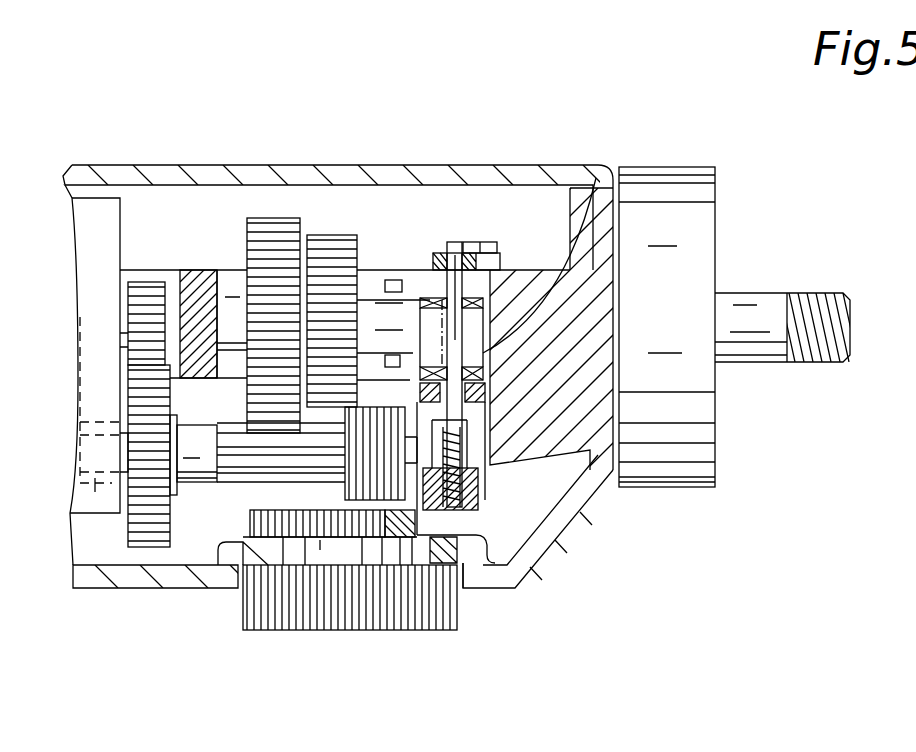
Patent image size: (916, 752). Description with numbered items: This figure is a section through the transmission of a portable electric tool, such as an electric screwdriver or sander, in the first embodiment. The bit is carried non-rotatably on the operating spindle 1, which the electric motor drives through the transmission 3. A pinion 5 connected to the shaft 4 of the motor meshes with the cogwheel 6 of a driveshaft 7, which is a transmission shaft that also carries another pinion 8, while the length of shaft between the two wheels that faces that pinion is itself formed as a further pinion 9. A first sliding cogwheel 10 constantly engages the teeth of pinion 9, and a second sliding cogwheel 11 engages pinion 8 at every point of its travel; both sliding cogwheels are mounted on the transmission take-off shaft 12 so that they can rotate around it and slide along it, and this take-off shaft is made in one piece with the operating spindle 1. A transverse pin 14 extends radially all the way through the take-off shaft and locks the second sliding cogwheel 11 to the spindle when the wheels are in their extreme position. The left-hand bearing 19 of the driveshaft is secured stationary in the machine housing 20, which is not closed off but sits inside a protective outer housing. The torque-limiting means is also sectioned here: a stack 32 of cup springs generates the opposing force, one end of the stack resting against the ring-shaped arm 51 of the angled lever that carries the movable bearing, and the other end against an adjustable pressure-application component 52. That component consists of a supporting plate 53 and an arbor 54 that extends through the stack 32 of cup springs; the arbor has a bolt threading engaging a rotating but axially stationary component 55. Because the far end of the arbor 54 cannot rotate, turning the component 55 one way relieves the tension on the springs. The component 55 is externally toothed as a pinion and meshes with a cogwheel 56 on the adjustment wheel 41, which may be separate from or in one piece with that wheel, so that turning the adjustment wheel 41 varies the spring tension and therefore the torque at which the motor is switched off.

The operating spindle 1 is at (763, 310).
The transmission 3 is at (343, 217).
The shaft 4 is at (122, 300).
The pinion 5 is at (148, 297).
The cogwheel 6 is at (155, 533).
The driveshaft 7 is at (205, 463).
The pinion 8 is at (382, 490).
The pinion 9 is at (317, 457).
The first sliding cogwheel 10 is at (268, 225).
The second sliding cogwheel 11 is at (322, 243).
The transmission take-off shaft 12 is at (235, 303).
The transverse pin 14 is at (397, 283).
The bearing 19 is at (95, 480).
The machine housing 20 is at (98, 217).
The stack of cup springs 32 is at (515, 335).
The adjustment wheel 41 is at (387, 633).
The arm 51 is at (465, 385).
The pressure-application component 52 is at (470, 287).
The supporting plate 53 is at (430, 303).
The arbor 54 is at (596, 178).
The rotating component 55 is at (485, 533).
The cogwheel 56 is at (242, 543).